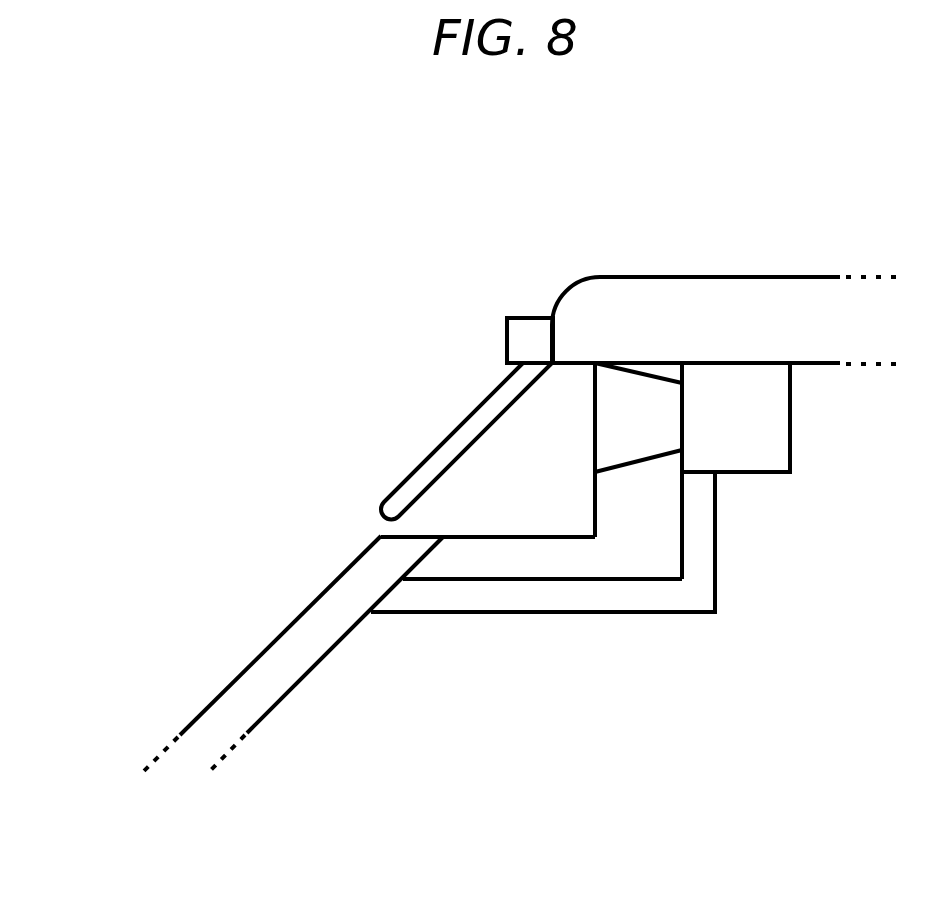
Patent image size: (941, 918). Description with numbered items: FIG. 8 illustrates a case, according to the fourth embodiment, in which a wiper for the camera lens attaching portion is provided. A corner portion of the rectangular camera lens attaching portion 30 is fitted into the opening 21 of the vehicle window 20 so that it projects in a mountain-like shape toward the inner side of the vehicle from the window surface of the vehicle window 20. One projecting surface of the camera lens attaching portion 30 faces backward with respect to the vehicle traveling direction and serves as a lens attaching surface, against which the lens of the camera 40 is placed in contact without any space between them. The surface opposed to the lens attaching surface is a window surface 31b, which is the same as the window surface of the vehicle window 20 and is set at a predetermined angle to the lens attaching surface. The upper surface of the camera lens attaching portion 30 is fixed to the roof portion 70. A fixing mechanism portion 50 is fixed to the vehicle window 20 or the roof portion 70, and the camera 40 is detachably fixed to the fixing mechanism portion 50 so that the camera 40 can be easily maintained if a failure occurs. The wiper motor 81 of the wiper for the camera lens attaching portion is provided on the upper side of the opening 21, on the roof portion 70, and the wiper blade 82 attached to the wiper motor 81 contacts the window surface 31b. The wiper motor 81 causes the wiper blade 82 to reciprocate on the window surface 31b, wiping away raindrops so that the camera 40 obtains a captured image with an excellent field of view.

The vehicle window 20 is at (318, 660).
The opening 21 is at (304, 692).
The camera lens attaching portion 30 is at (530, 484).
The window surface 31b is at (387, 522).
The camera 40 is at (790, 472).
The fixing mechanism portion 50 is at (565, 614).
The roof portion 70 is at (703, 277).
The wiper motor 81 is at (527, 317).
The wiper blade 82 is at (483, 402).